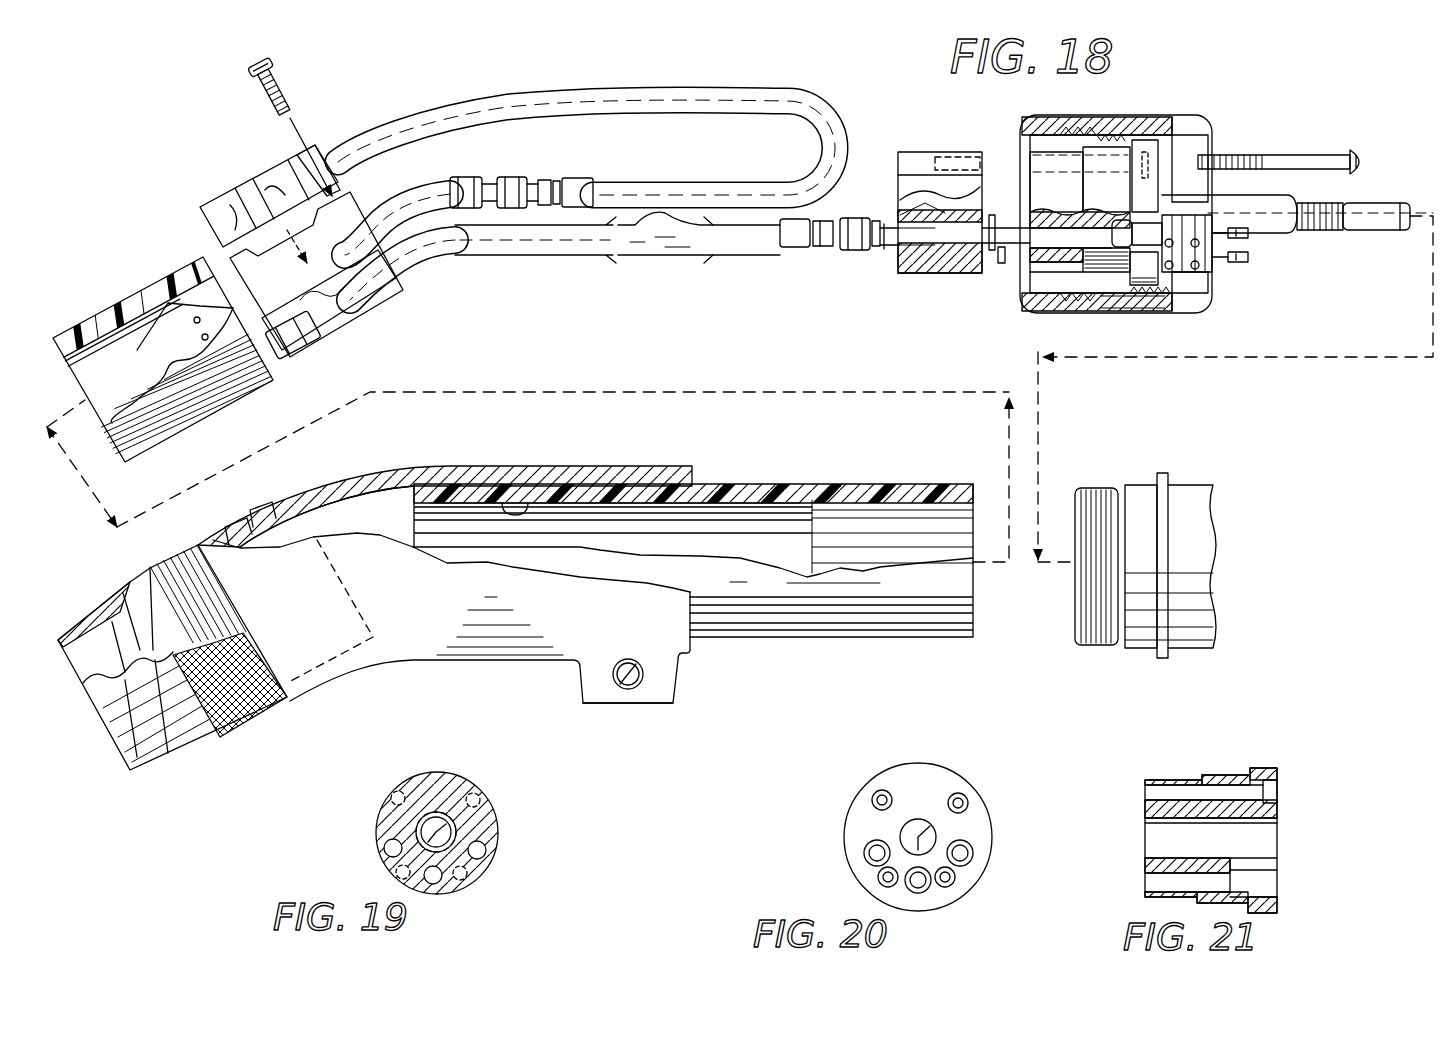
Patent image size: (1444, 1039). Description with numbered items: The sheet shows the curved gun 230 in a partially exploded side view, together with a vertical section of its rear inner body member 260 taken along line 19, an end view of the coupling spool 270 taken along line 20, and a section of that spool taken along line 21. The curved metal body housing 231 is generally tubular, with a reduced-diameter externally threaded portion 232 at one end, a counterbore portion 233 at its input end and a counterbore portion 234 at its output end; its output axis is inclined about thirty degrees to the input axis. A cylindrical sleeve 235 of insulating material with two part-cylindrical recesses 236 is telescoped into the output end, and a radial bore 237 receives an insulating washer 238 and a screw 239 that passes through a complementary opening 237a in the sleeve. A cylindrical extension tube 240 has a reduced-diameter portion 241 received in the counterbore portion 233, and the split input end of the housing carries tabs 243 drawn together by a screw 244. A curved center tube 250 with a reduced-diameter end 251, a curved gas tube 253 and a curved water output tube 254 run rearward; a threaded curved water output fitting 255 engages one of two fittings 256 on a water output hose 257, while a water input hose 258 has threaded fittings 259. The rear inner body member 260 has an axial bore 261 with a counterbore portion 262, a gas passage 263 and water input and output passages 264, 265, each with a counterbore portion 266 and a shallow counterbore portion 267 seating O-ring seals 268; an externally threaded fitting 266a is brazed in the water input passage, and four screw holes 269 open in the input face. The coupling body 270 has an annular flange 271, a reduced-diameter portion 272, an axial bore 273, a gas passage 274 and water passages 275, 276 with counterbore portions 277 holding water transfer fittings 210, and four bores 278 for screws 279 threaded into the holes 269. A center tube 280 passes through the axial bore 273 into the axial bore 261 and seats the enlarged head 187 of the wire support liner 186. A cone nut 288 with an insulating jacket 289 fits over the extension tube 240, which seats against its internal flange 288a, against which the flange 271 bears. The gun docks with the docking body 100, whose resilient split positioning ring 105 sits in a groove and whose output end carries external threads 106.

In FIG. 18, the docking body 100 is at (1232, 462).
In FIG. 18, the resilient split positioning ring 105 is at (1152, 468).
In FIG. 18, the external threads 106 is at (1095, 648).
In FIG. 18, the wire support liner 186 is at (1325, 214).
In FIG. 18, the enlarged head 187 is at (1388, 200).
In FIG. 18, the water transfer fittings 210 is at (1233, 272).
In FIG. 18, the curved gun 230 is at (792, 73).
In FIG. 18, the curved metal body housing 231 is at (528, 506).
In FIG. 18, the externally threaded portion 232 is at (190, 580).
In FIG. 18, the counterbore portion 233 is at (449, 490).
In FIG. 18, the counterbore portion 234 is at (283, 514).
In FIG. 18, the cylindrical sleeve 235 is at (117, 307).
In FIG. 18, the part-cylindrical recesses 236 is at (107, 337).
In FIG. 18, the radial bore 237 is at (168, 284).
In FIG. 18, the complementary opening 237a is at (258, 520).
In FIG. 18, the insulating washer 238 is at (282, 76).
In FIG. 18, the screw 239 is at (266, 157).
In FIG. 18, the cylindrical extension tube 240 is at (797, 460).
In FIG. 18, the reduced-diameter portion 241 is at (528, 504).
In FIG. 18, the tabs 243 is at (582, 693).
In FIG. 18, the screw 244 is at (632, 679).
In FIG. 18, the curved center tube 250 is at (907, 154).
In FIG. 18, the reduced-diameter end 251 is at (902, 202).
In FIG. 18, the curved gas tube 253 is at (656, 240).
In FIG. 18, the curved water output tube 254 is at (606, 242).
In FIG. 18, the curved water output fitting 255 is at (422, 185).
In FIG. 18, the fittings 256 is at (202, 219).
In FIG. 18, the water output hose 257 is at (655, 88).
In FIG. 18, the water input hose 258 is at (510, 242).
In FIG. 18, the threaded fittings 259 is at (850, 253).
In FIG. 18, the rear inner body member 260 is at (909, 150).
In FIG. 19, the rear inner body member 260 is at (437, 814).
In FIG. 18, the axial bore 261 is at (945, 191).
In FIG. 19, the counterbore portion 262 is at (457, 832).
In FIG. 19, the gas passage 263 is at (393, 848).
In FIG. 19, the water input passage 264 is at (477, 850).
In FIG. 19, the water output passage 265 is at (437, 880).
In FIG. 18, the counterbore portion 266 is at (900, 254).
In FIG. 18, the externally threaded fitting 266a is at (882, 246).
In FIG. 18, the shallow counterbore portion 267 is at (998, 215).
In FIG. 18, the O-ring seals 268 is at (1080, 212).
In FIG. 18, the screw holes 269 is at (982, 167).
In FIG. 19, the screw holes 269 is at (395, 796).
In FIG. 18, the coupling body 270 is at (1052, 146).
In FIG. 21, the coupling body 270 is at (1215, 742).
In FIG. 20, the annular flange 271 is at (948, 748).
In FIG. 21, the annular flange 271 is at (1250, 770).
In FIG. 21, the reduced-diameter portion 272 is at (1162, 770).
In FIG. 20, the axial bore 273 is at (900, 837).
In FIG. 21, the axial bore 273 is at (1277, 822).
In FIG. 20, the gas passage 274 is at (960, 853).
In FIG. 18, the water passage 275 is at (1086, 229).
In FIG. 20, the water passage 275 is at (877, 853).
In FIG. 20, the water passage 276 is at (918, 880).
In FIG. 21, the water passage 276 is at (1150, 890).
In FIG. 20, the counterbore portions 277 is at (918, 880).
In FIG. 21, the counterbore portions 277 is at (1278, 892).
In FIG. 20, the bores 278 is at (882, 800).
In FIG. 21, the bores 278 is at (1155, 795).
In FIG. 18, the screws 279 is at (1335, 128).
In FIG. 18, the center tube 280 is at (1276, 235).
In FIG. 19, the center tube 280 is at (417, 832).
In FIG. 18, the cone nut 288 is at (1175, 117).
In FIG. 18, the internal flange 288a is at (1085, 297).
In FIG. 18, the insulating jacket 289 is at (1185, 310).
In FIG. 18, the section line 19— 19 is at (985, 125).
In FIG. 18, the section line 20— 20 is at (1163, 77).
In FIG. 20, the section line 21— 21 is at (980, 777).